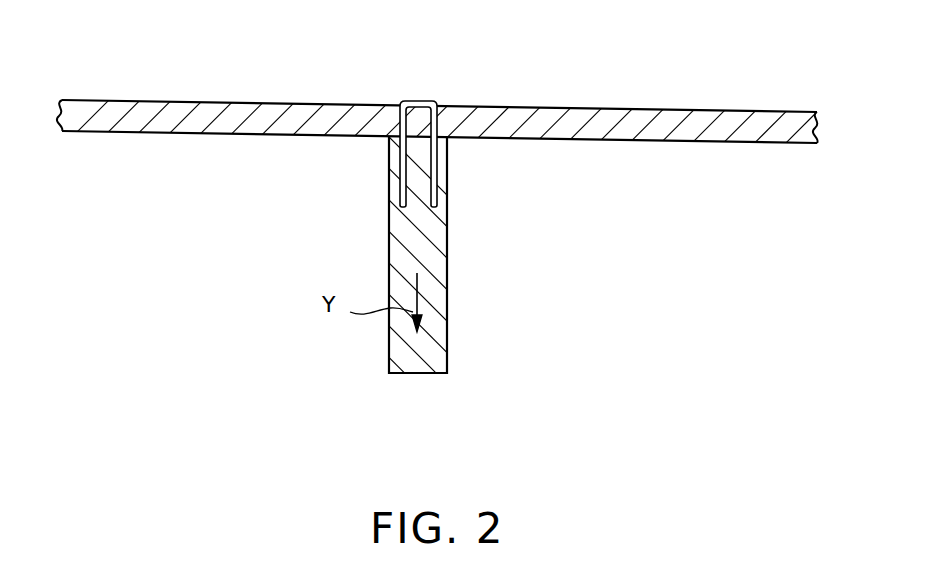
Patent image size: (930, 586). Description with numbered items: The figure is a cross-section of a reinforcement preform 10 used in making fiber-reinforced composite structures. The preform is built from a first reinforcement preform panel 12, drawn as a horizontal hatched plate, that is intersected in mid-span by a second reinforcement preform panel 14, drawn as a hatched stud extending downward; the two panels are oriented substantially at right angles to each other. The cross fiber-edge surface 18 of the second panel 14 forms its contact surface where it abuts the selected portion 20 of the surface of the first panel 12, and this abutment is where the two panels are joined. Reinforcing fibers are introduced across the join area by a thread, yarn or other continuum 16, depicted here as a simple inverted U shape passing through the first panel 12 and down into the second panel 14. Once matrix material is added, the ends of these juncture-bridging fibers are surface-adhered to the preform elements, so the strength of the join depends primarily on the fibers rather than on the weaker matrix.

The reinforcement preform 10 is at (444, 224).
The first reinforcement preform panel 12 is at (653, 126).
The second reinforcement preform panel 14 is at (438, 348).
The continuum 16 is at (401, 102).
The cross fiber-edge surface 18 is at (385, 133).
The selected portion 20 is at (481, 78).